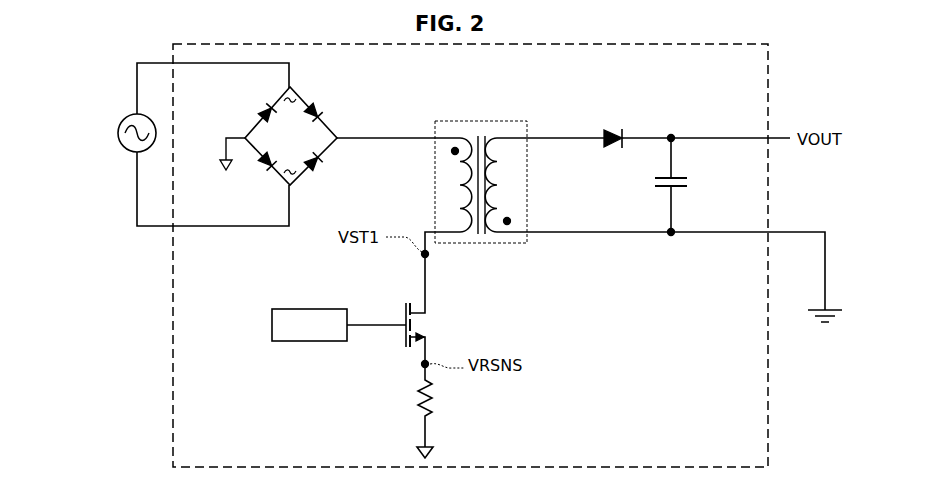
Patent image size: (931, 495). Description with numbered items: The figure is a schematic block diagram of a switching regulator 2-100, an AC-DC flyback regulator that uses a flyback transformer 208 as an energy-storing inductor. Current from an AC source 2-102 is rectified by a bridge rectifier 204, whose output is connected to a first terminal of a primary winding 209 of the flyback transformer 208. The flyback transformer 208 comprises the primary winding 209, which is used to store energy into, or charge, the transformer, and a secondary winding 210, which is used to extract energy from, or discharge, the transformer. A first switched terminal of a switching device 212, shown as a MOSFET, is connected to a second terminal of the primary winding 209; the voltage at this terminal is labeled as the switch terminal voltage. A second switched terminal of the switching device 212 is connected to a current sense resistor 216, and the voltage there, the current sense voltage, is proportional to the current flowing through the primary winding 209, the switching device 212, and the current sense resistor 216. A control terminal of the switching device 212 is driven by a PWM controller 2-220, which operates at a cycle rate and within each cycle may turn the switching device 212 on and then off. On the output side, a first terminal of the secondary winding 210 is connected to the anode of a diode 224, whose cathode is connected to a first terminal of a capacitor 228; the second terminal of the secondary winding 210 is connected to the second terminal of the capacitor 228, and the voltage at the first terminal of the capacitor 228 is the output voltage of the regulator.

The switching regulator 2-100 is at (171, 343).
The AC source 2-102 is at (122, 121).
The bridge rectifier 204 is at (316, 112).
The flyback transformer 208 is at (478, 166).
The primary winding 209 is at (458, 185).
The secondary winding 210 is at (500, 191).
The diode 224 is at (602, 130).
The capacitor 228 is at (690, 184).
The switching device 212 is at (404, 306).
The PWM controller 2-220 is at (304, 342).
The current sense resistor 216 is at (433, 394).